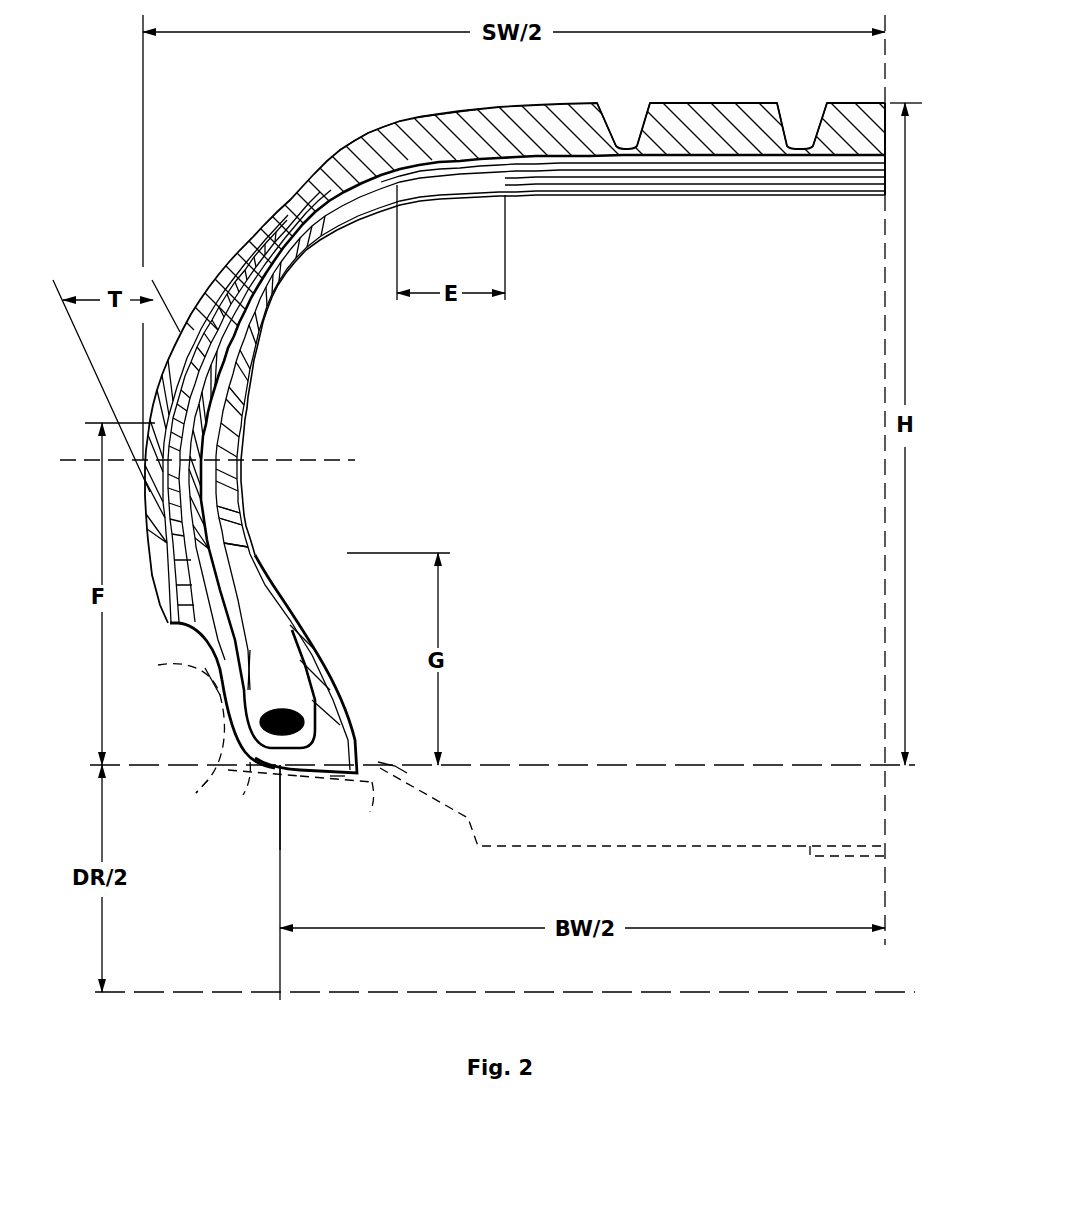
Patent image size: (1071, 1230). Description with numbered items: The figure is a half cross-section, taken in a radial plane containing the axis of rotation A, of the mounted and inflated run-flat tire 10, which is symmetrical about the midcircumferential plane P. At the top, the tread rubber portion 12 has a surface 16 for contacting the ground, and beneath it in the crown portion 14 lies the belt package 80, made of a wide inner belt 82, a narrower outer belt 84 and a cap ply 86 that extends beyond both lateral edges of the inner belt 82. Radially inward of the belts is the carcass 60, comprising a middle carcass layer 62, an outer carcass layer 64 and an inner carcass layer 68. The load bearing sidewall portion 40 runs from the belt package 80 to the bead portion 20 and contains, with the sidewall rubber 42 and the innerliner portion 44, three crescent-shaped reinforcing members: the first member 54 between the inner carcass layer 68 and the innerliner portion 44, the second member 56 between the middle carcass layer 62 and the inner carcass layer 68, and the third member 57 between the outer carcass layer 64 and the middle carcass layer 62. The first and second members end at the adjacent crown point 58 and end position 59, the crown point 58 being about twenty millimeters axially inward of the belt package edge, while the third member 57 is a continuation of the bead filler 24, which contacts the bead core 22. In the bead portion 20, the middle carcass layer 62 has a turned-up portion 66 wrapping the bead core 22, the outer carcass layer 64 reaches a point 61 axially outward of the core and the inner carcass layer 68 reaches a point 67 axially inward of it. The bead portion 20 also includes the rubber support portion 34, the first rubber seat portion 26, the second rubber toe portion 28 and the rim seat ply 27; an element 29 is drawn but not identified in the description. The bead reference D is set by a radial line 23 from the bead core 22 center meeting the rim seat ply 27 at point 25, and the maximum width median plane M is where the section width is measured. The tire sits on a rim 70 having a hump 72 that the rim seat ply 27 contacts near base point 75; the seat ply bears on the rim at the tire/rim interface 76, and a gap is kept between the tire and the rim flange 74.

The run-flat tire 10 is at (238, 152).
The tread rubber portion 12 is at (705, 130).
The crown portion 14 is at (540, 103).
The tread surface 16 is at (673, 108).
The bead portion 20 is at (335, 680).
The bead core 22 is at (318, 776).
The radial line 23 is at (278, 848).
The bead filler 24 is at (298, 640).
The point 25 is at (273, 778).
The first rubber seat portion 26 is at (227, 753).
The rim seat ply 27 is at (220, 708).
The second rubber toe portion 28 is at (333, 707).
The carcass ply 29 is at (243, 417).
The rubber support portion 34 is at (172, 600).
The load bearing sidewall portion 40 is at (245, 240).
The sidewall rubber 42 is at (160, 520).
The innerliner portion 44 is at (303, 297).
The first crescent-shaped reinforcing member 54 is at (333, 243).
The second crescent-shaped reinforcing member 56 is at (265, 322).
The third crescent-shaped reinforcing member 57 is at (277, 233).
The crown point 58 is at (490, 193).
The end position of second crescent-shaped member 59 is at (290, 620).
The carcass 60 is at (590, 196).
The point 61 is at (262, 760).
The middle carcass layer 62 is at (227, 527).
The outer carcass layer 64 is at (257, 535).
The turned-up portion 66 is at (277, 587).
The point 67 is at (337, 790).
The inner carcass layer 68 is at (230, 515).
The rim 70 is at (470, 818).
The hump 72 is at (395, 772).
The flange 74 is at (177, 667).
The base point 75 is at (371, 785).
The tire/rim interface 76 is at (208, 790).
The belt package 80 is at (393, 140).
The wide inner belt 82 is at (598, 132).
The narrower outer belt 84 is at (780, 140).
The cap ply 86 is at (476, 147).
The maximum width median plane M is at (313, 460).
The bead reference D is at (497, 765).
The midcircumferential plane P is at (880, 325).
The axis of rotation A is at (175, 992).